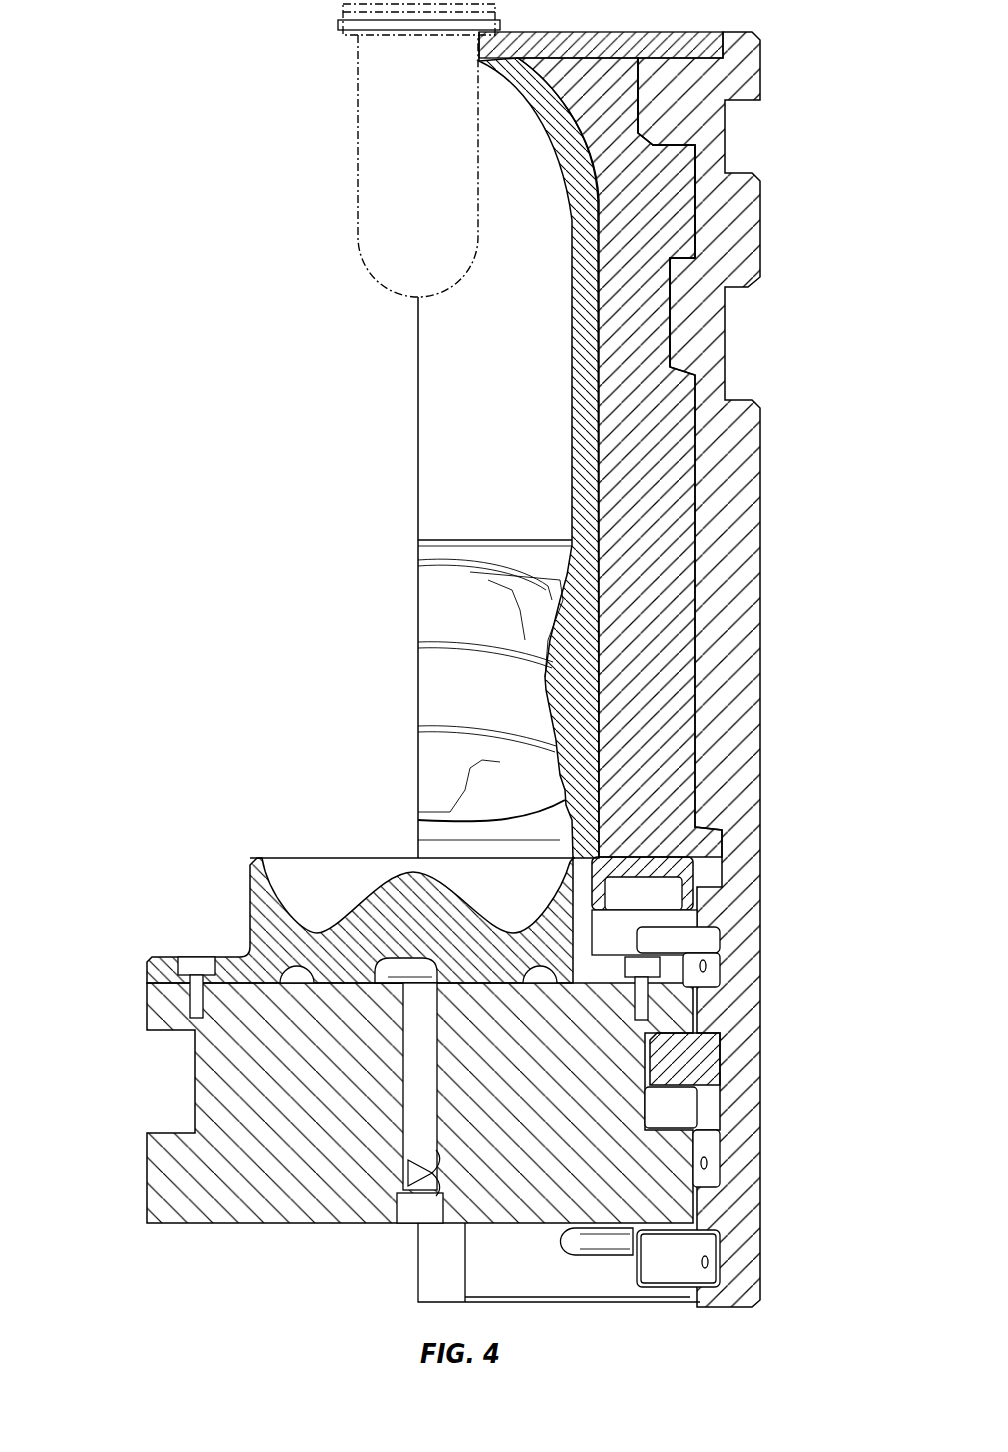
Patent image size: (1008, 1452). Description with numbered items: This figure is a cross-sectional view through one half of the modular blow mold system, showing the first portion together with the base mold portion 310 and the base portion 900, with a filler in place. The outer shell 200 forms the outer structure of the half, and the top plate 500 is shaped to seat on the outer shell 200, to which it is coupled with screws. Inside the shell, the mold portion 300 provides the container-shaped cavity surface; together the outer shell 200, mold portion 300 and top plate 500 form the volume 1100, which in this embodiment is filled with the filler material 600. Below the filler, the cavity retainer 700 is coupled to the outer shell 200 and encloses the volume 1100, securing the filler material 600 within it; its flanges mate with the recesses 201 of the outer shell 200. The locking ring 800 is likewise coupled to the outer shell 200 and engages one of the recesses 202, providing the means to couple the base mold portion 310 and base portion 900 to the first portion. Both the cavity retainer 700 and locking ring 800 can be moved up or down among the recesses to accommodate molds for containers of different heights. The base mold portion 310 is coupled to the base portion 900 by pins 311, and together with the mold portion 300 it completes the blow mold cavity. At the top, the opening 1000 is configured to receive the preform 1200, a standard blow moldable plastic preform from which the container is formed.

The opening 1000 is at (372, 13).
The preform 1200 is at (352, 133).
The top plate 500 is at (598, 40).
The outer shell 200 is at (748, 66).
The volume 1100 is at (645, 206).
The mold portion 300 is at (590, 368).
The filler material 600 is at (660, 437).
The cavity retainer 700 is at (652, 857).
The recesses 202 is at (728, 868).
The base mold portion 310 is at (263, 913).
The pins 311 is at (200, 965).
The locking ring 800 is at (692, 1068).
The base portion 900 is at (170, 1178).
The recesses 201 is at (600, 1242).